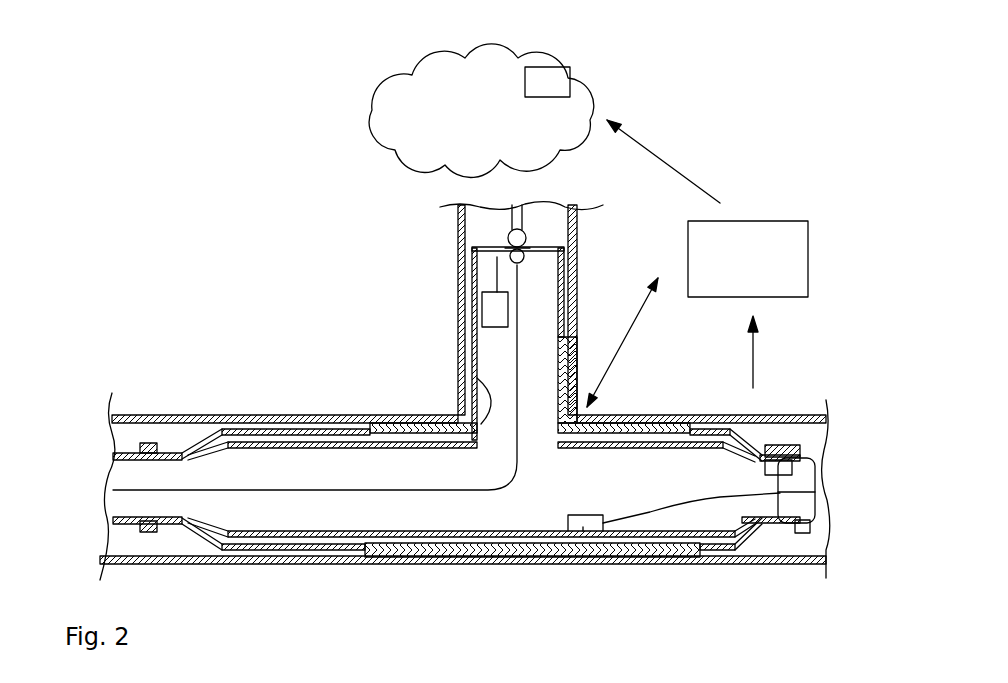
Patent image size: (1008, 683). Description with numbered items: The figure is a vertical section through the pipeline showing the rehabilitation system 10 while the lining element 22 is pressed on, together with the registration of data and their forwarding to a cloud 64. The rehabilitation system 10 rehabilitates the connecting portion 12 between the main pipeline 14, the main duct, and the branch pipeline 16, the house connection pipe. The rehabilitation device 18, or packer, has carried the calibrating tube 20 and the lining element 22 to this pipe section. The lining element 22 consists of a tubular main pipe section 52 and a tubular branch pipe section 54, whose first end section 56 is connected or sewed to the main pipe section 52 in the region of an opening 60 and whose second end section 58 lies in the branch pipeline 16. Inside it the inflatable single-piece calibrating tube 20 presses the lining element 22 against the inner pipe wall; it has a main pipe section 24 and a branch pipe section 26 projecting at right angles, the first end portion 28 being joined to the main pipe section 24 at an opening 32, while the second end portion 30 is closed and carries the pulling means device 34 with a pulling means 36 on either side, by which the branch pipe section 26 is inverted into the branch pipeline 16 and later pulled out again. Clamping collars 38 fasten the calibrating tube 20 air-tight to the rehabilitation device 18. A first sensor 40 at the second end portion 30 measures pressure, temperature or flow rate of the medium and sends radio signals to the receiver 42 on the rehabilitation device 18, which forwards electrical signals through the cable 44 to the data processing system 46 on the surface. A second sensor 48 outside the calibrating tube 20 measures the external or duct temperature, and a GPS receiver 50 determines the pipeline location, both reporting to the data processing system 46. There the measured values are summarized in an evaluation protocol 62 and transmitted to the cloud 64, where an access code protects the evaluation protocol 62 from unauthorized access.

The rehabilitation system 10 is at (185, 422).
The connecting portion 12 is at (580, 403).
The main pipeline 14 is at (682, 422).
The branch pipeline 16 is at (578, 229).
The rehabilitation device 18 is at (132, 416).
The calibrating tube 20 is at (212, 430).
The lining element 22 is at (474, 385).
The main pipe section 24 is at (292, 428).
The branch pipe section 26 is at (475, 272).
The first end portion 28 is at (470, 395).
The second end portion 30 is at (488, 247).
The opening 32 is at (465, 350).
The pulling means device 34 is at (530, 235).
The pulling means 36 is at (515, 230).
The clamping collar 38 is at (786, 445).
The first sensor 40 is at (488, 308).
The receiver 42 is at (585, 531).
The cable 44 is at (677, 507).
The data processing system 46 is at (760, 228).
The second sensor 48 is at (782, 525).
The GPS receiver 50 is at (800, 467).
The main pipe section 52 is at (382, 422).
The branch pipe section 54 is at (578, 352).
The first end section 56 is at (593, 380).
The second end section 58 is at (622, 336).
The opening 60 is at (547, 440).
The evaluation protocol 62 is at (557, 77).
The cloud 64 is at (543, 48).